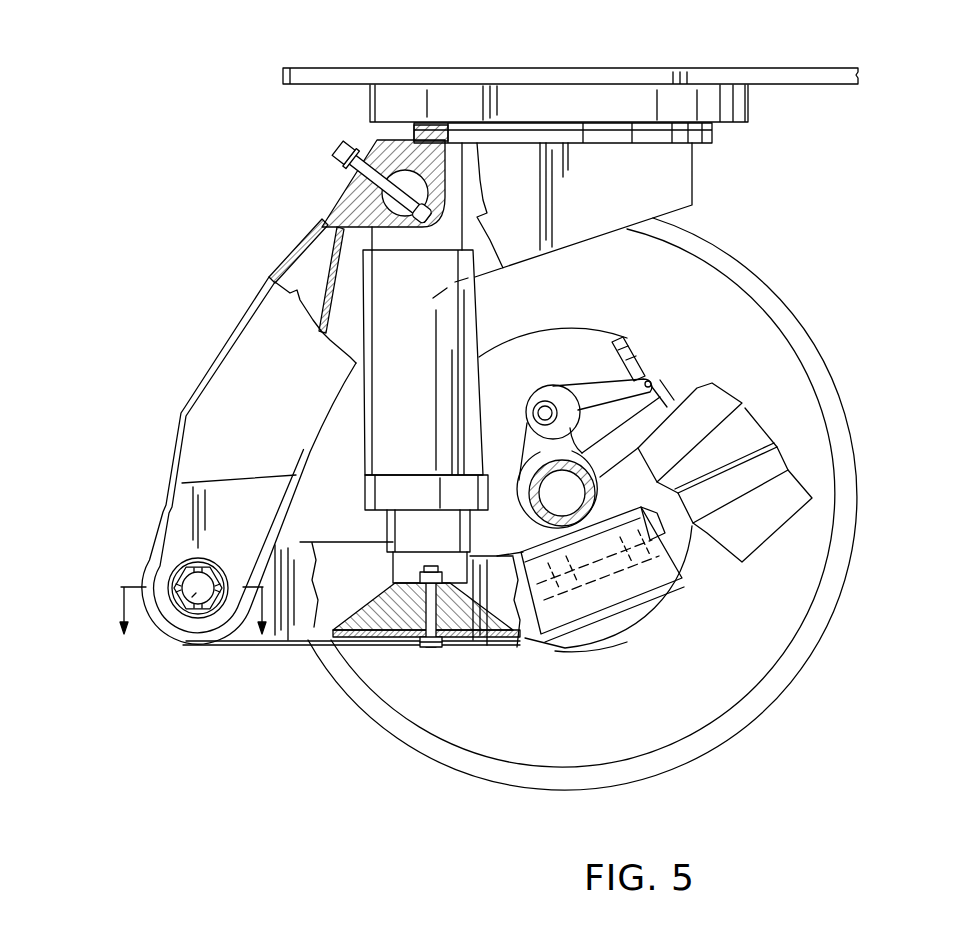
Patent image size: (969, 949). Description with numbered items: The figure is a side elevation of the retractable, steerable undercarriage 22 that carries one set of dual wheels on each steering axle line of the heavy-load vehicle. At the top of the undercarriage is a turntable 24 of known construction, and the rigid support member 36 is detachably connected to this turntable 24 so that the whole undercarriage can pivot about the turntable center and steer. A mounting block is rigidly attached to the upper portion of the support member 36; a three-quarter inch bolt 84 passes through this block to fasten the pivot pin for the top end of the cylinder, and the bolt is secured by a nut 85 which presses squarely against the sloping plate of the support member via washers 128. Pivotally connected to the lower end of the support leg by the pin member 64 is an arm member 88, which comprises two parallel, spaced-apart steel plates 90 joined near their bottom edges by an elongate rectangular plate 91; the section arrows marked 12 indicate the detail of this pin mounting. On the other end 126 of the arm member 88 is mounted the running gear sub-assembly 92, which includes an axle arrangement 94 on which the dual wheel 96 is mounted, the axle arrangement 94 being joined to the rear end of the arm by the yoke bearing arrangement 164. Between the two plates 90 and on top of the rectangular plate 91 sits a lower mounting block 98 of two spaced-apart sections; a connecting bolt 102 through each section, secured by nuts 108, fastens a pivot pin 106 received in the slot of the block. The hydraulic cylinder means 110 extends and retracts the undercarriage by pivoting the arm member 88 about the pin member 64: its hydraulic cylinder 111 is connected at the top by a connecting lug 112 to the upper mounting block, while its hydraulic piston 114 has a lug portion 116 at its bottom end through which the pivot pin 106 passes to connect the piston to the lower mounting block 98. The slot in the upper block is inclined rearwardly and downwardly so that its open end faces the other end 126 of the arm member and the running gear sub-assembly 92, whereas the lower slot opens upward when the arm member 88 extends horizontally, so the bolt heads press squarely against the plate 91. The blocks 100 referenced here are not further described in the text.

The turntable 24 is at (630, 95).
The washers 128 is at (351, 158).
The bolt 84 is at (337, 150).
The nut 85 is at (343, 165).
The connecting lug 112 is at (453, 203).
The retractable undercarriage 22 is at (272, 248).
The dual wheel 96 is at (760, 281).
The rigid support member 36 is at (277, 340).
The hydraulic cylinder means 110 is at (460, 307).
The axle arrangement 94 is at (597, 460).
The hydraulic cylinder 111 is at (463, 400).
The hydraulic piston 114 is at (410, 525).
The nuts 108 is at (396, 642).
The pivot pin 106 is at (413, 597).
The line of axles 12 is at (193, 615).
The pin member 64 is at (182, 647).
The plates 90 is at (243, 647).
The arm member 88 is at (290, 647).
The elongate rectangular plate 91 is at (383, 640).
The mounting block 100 is at (447, 640).
The mounting block 98 is at (487, 640).
The lug portion 116 is at (530, 600).
The connecting bolt 102 is at (427, 650).
The yoke bearing arrangement 164 is at (575, 567).
The other end of the arm member 126 is at (666, 590).
The running gear sub-assembly 92 is at (702, 527).